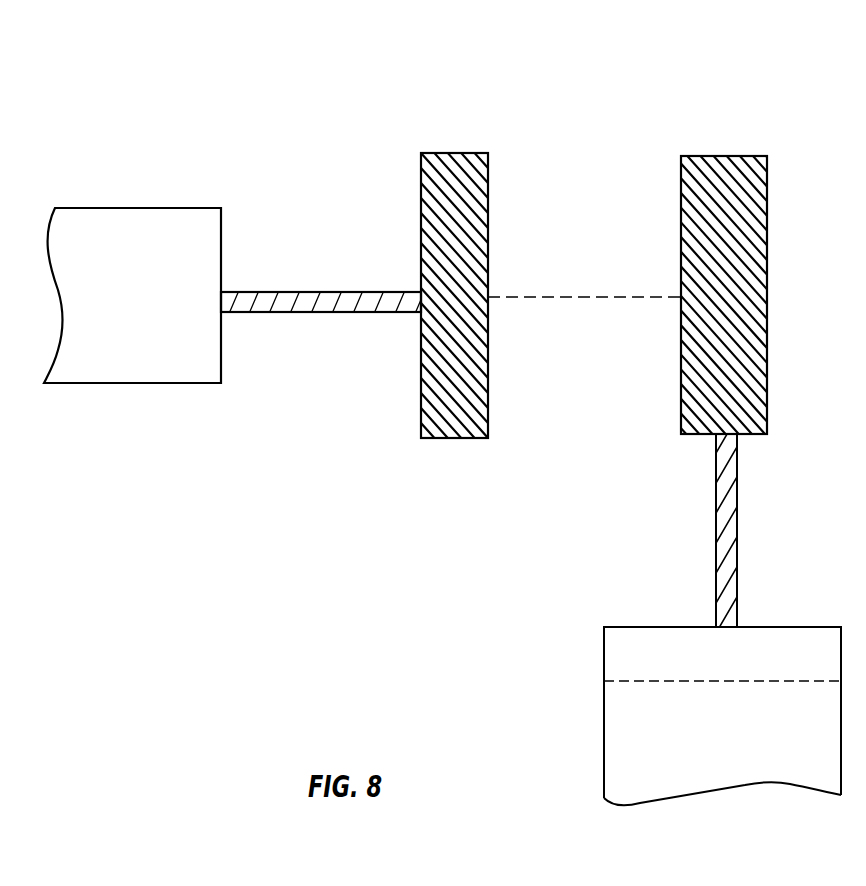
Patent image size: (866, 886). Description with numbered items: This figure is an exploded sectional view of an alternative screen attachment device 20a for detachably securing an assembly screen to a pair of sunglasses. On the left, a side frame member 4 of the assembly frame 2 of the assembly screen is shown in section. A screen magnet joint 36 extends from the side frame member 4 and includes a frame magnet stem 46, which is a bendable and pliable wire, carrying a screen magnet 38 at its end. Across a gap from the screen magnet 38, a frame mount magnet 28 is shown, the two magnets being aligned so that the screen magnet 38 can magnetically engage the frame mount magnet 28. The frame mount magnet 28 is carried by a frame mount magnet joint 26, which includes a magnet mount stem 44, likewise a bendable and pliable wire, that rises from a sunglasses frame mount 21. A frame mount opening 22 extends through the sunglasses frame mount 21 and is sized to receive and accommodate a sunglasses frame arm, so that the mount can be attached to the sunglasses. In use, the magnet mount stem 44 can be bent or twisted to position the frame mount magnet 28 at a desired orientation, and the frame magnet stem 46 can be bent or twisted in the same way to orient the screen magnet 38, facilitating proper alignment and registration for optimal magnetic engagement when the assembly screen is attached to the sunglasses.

The screen attachment device 20a is at (230, 64).
The assembly frame 2 is at (143, 386).
The side frame member 4 is at (156, 228).
The frame magnet stem 46 is at (327, 302).
The screen magnet joint 36 is at (305, 195).
The screen magnet 38 is at (470, 172).
The frame mount magnet 28 is at (750, 240).
The frame mount magnet joint 26 is at (671, 476).
The magnet mount stem 44 is at (716, 517).
The sunglasses frame mount 21 is at (625, 772).
The frame mount opening 22 is at (650, 723).